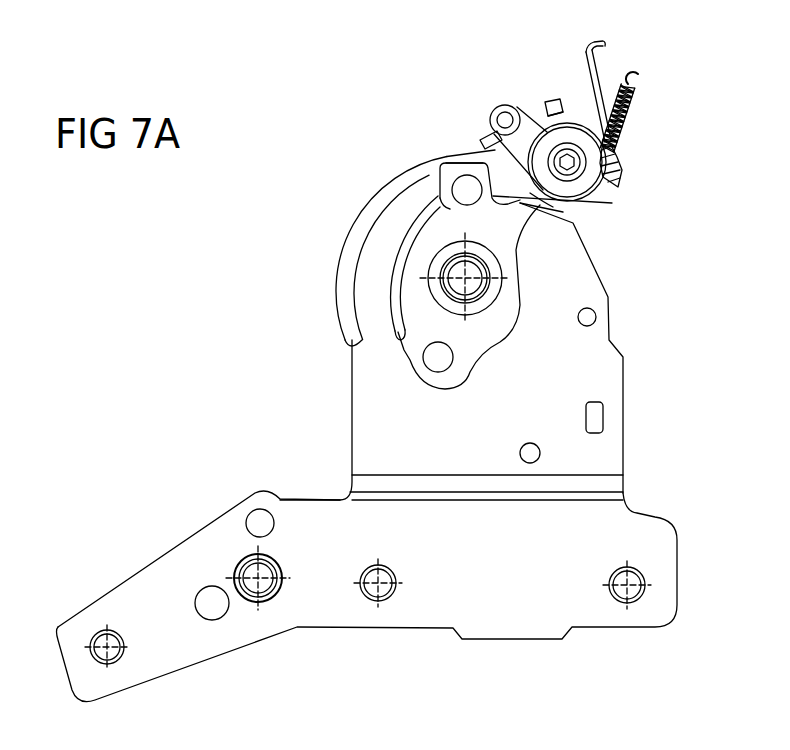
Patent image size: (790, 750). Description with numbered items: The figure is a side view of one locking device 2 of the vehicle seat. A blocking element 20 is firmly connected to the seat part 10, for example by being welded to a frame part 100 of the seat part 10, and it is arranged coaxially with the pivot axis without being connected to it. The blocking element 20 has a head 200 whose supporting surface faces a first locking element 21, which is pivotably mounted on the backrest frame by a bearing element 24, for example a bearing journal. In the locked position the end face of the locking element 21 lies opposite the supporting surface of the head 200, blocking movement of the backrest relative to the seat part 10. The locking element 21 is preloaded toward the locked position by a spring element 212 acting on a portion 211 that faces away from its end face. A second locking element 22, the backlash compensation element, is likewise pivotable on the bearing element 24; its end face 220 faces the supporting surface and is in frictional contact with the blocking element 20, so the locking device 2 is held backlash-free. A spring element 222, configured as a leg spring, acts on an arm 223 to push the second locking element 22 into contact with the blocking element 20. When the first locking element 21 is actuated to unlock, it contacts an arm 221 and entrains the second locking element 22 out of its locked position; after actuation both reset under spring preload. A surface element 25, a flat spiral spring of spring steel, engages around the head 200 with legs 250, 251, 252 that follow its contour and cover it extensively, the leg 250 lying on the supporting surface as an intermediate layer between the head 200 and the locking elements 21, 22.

The locking device 2 is at (372, 142).
The seat part 10 is at (283, 638).
The frame part 100 is at (372, 453).
The head 200 is at (432, 175).
The blocking element 20 is at (428, 303).
The leg 252 is at (442, 207).
The leg 250 is at (563, 212).
The surface element 25 is at (450, 156).
The leg 251 is at (457, 166).
The end face 220 is at (473, 160).
The arm 223 is at (488, 148).
The locking element 21 is at (520, 127).
The bearing element 24 is at (580, 157).
The second locking element 22 is at (543, 103).
The arm 221 is at (551, 107).
The spring element 222 is at (610, 43).
The portion 211 is at (617, 180).
The spring element 212 is at (633, 107).